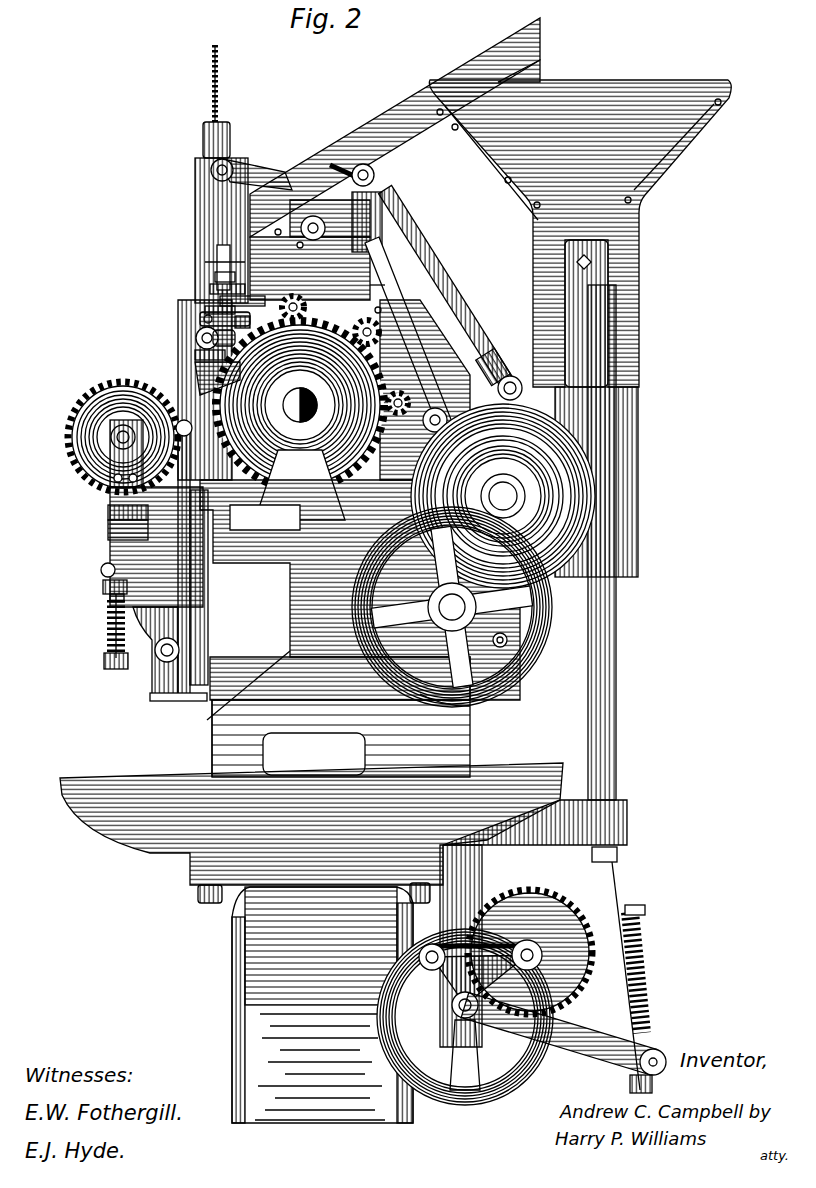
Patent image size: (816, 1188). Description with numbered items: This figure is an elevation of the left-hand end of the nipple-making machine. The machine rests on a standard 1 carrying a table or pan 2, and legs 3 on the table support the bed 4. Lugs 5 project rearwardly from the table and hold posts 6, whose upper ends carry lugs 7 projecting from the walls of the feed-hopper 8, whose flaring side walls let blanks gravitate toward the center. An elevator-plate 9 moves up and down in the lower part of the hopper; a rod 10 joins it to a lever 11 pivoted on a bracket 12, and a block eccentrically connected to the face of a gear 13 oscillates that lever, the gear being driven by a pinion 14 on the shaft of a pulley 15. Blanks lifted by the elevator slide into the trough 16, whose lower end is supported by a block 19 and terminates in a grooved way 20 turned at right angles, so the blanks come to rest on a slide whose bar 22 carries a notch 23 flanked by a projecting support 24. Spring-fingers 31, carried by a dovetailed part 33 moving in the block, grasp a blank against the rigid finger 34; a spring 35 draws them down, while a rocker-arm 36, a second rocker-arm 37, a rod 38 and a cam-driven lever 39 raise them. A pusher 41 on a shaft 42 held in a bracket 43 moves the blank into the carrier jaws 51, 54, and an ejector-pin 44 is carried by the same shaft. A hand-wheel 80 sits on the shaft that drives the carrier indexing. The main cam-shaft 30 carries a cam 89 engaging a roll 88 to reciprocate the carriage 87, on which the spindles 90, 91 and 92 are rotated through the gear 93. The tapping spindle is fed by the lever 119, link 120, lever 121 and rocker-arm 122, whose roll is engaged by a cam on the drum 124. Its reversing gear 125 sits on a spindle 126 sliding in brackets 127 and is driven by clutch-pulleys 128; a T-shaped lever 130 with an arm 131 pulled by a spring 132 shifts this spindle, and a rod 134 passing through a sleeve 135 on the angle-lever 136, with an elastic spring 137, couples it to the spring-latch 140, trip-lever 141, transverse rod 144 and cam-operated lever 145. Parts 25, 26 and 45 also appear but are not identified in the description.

The standard 1 is at (345, 1120).
The table or pan 2 is at (80, 822).
The legs 3 is at (340, 717).
The bed 4 is at (212, 700).
The lugs 5 is at (630, 818).
The posts 6 is at (616, 714).
The lugs 7 is at (610, 259).
The feed-hopper 8 is at (622, 94).
The elevator-plate 9 is at (600, 491).
The rod 10 is at (645, 918).
The lever 11 is at (645, 1048).
The bracket 12 is at (465, 1017).
The gear 13 is at (560, 908).
The pinion 14 is at (478, 1016).
The pulley 15 is at (465, 1030).
The trough 16 is at (400, 112).
The block 19 is at (366, 294).
The grooved way 20 is at (215, 258).
The bar 22 is at (208, 289).
The notch 23 is at (218, 300).
The projecting support 24 is at (203, 311).
The clevis 25 is at (392, 215).
The connecting rod 26 is at (432, 268).
The main cam-shaft 30 is at (562, 532).
The spring-fingers 31 is at (205, 265).
The dovetailed part 33 is at (203, 132).
The rigid finger 34 is at (213, 279).
The spring 35 is at (219, 80).
The rocker-arm 36 is at (264, 175).
The rocker-arm 37 is at (336, 162).
The rod 38 is at (455, 303).
The lever 39 is at (504, 372).
The pusher 41 is at (448, 350).
The shaft 42 is at (213, 340).
The bracket 43 is at (196, 371).
The ejector-pin 44 is at (196, 338).
The lever 45 is at (200, 318).
The jaws 51 is at (200, 326).
The jaws 54 is at (195, 356).
The hand-wheel 80 is at (528, 690).
The carriage 87 is at (378, 301).
The roll 88 is at (360, 590).
The cam 89 is at (582, 473).
The spindle 90 is at (300, 405).
The spindle 91 is at (300, 405).
The spindle 92 is at (310, 405).
The gear 93 is at (300, 474).
The lever 119 is at (108, 498).
The link 120 is at (265, 517).
The lever 121 is at (205, 548).
The rocker-arm 122 is at (590, 556).
The drum 124 is at (540, 500).
The gear 125 is at (73, 438).
The spindle 126 is at (73, 468).
The brackets 127 is at (101, 570).
The clutch-pulleys 128 is at (78, 402).
The T-shaped lever 130 is at (103, 650).
The arm 131 is at (108, 545).
The spring 132 is at (103, 588).
The rod 134 is at (108, 528).
The sleeve 135 is at (108, 600).
The angle-lever 136 is at (156, 592).
The spring 137 is at (106, 620).
The spring-latch 140 is at (150, 697).
The trip-lever 141 is at (183, 702).
The rod 144 is at (492, 700).
The lever 145 is at (520, 648).